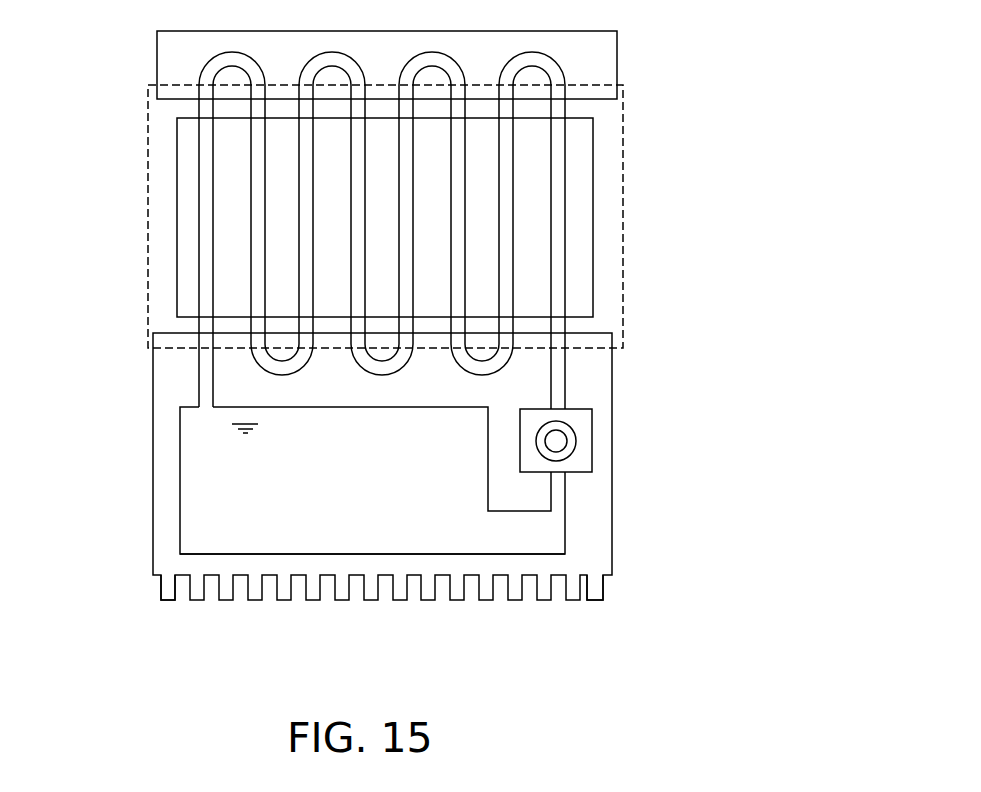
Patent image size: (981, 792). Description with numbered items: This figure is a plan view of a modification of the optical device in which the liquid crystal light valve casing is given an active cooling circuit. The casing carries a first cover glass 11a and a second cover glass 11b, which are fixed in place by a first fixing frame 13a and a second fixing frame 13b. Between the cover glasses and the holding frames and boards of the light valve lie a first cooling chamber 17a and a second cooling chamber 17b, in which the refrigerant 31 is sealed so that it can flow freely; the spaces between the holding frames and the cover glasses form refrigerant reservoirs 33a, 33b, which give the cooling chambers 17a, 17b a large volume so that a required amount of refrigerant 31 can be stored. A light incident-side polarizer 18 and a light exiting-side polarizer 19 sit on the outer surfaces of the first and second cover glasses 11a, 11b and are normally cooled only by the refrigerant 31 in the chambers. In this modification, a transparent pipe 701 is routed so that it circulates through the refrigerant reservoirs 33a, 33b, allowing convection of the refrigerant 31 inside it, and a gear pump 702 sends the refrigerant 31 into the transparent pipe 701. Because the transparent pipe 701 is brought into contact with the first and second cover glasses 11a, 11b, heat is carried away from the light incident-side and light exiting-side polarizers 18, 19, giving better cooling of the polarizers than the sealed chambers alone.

The first fixing frame 13a is at (473, 315).
The second fixing frame 13b is at (617, 61).
The first cover glass 11a is at (474, 216).
The second cover glass 11b is at (623, 172).
The transparent pipe 701 is at (593, 255).
The light incident-side polarizer 18 is at (301, 230).
The light exiting-side polarizer 19 is at (177, 172).
The refrigerant 31 is at (185, 461).
The gear pump 702 is at (592, 447).
The refrigerant reservoir 33a is at (372, 603).
The refrigerant reservoir 33b is at (230, 555).
The first cooling chamber 17a is at (382, 618).
The second cooling chamber 17b is at (398, 590).